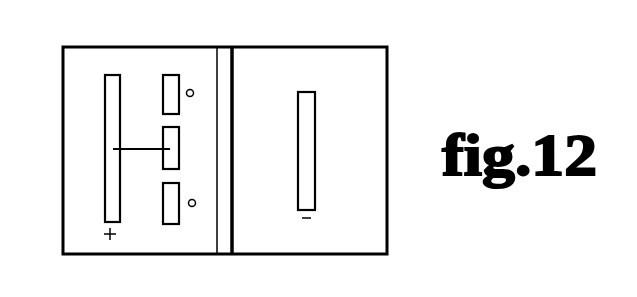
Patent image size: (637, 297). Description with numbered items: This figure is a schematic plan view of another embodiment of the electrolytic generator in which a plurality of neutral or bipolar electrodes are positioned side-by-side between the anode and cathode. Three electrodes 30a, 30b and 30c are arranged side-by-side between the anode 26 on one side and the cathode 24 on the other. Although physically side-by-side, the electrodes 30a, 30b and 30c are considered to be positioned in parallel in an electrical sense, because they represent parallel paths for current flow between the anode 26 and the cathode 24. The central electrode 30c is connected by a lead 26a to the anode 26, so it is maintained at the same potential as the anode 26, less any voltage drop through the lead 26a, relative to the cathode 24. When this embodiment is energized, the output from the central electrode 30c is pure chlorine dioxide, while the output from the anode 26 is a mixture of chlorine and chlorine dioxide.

The cathode 24 is at (315, 153).
The anode 26 is at (110, 178).
The lead 26a is at (138, 150).
The electrode 30a is at (178, 75).
The electrode 30b is at (177, 225).
The central electrode 30c is at (179, 151).